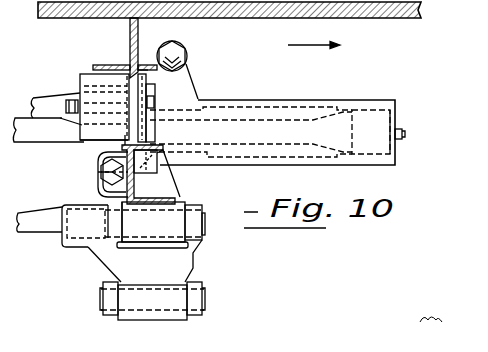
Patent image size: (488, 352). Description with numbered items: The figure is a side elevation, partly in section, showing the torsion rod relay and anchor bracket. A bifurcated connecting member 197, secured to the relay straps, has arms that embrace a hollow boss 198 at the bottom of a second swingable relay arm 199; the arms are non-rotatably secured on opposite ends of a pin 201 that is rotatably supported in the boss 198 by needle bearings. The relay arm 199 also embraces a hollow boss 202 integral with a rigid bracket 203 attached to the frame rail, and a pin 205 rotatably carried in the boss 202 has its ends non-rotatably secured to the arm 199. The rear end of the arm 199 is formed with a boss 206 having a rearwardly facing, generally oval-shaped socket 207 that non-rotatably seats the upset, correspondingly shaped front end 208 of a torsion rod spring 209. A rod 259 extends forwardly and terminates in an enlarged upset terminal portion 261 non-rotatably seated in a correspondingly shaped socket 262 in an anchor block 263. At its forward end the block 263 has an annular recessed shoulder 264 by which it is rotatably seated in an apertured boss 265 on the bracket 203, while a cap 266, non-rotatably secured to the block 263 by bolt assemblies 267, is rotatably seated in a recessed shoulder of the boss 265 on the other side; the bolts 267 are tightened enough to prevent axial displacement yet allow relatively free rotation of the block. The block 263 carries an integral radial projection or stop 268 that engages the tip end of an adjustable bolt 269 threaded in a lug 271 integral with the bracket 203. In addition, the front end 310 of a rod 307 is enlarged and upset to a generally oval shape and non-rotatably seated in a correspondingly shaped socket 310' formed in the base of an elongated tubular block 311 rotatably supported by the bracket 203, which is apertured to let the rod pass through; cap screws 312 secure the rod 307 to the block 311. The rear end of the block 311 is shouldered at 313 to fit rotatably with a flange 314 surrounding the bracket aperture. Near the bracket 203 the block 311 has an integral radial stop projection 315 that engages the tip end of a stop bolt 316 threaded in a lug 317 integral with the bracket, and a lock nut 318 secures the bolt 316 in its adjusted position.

The bifurcated connecting member 197 is at (113, 316).
The hollow boss 198 is at (152, 316).
The second swingable relay arm 199 is at (194, 263).
The pin 201 is at (206, 292).
The hollow boss 202 is at (201, 207).
The rigid bracket 203 is at (177, 197).
The pin 205 is at (205, 219).
The boss 206 is at (88, 248).
The socket 207 is at (118, 186).
The front end of torsion rod spring 208 is at (62, 238).
The torsion rod spring 209 is at (32, 220).
The rod 259 is at (37, 103).
The enlarged upset terminal portion 261 is at (80, 82).
The socket 262 is at (99, 173).
The anchor block 263 is at (112, 65).
The annular recessed shoulder 264 is at (129, 57).
The apertured boss 265 is at (140, 78).
The cap 266 is at (147, 97).
The bolt assemblies 267 is at (155, 104).
The radial projection or stop 268 is at (99, 170).
The adjustable bolt 269 is at (122, 206).
The lug 271 is at (118, 149).
The rod 307 is at (35, 143).
The front end of rod 310 is at (372, 149).
The socket 310' is at (272, 119).
The elongated tubular block 311 is at (378, 100).
The cap screws 312 is at (404, 131).
The shoulder 313 is at (148, 174).
The flange 314 is at (154, 158).
The radial stop projection 315 is at (188, 66).
The stop bolt 316 is at (181, 43).
The lug 317 is at (186, 54).
The lock nut 318 is at (184, 70).